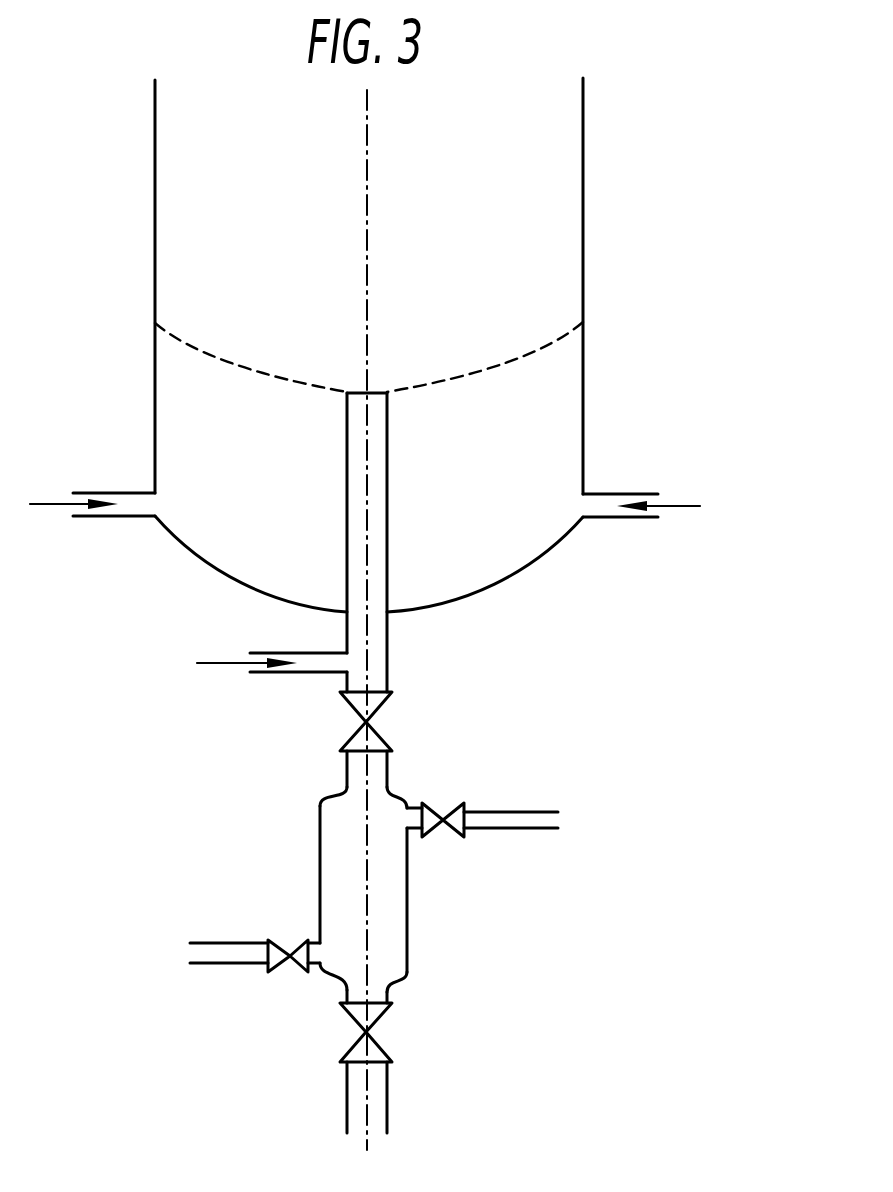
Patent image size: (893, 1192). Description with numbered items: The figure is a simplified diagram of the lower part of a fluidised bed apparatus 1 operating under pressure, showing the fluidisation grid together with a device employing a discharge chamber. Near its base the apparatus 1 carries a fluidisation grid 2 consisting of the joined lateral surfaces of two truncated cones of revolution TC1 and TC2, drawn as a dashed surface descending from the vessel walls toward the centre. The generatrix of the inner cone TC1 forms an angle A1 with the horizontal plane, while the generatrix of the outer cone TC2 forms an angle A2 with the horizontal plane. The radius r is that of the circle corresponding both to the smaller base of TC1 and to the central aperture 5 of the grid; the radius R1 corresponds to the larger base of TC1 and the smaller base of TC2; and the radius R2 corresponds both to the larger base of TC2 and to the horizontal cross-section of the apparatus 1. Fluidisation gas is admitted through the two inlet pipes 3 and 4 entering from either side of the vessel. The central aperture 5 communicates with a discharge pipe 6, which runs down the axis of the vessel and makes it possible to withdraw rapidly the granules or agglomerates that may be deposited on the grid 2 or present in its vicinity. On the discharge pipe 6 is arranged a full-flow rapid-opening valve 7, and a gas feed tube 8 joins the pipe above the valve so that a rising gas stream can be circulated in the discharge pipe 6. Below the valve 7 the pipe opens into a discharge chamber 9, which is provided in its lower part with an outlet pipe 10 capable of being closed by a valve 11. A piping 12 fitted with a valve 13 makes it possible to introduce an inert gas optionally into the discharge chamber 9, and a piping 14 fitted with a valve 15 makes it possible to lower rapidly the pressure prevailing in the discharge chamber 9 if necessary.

The fluidised bed apparatus 1 is at (157, 182).
The fluidisation grid 2 is at (243, 369).
The inlet pipe for fluidisation gas 3 is at (98, 490).
The inlet pipe for fluidisation gas 4 is at (626, 520).
The central aperture of the fluidisation grid 5 is at (354, 397).
The discharge pipe 6 is at (347, 512).
The full-flow rapid-opening valve 7 is at (378, 734).
The gas feed tube 8 is at (290, 675).
The discharge chamber 9 is at (320, 836).
The outlet pipe 10 is at (387, 1112).
The valve 11 is at (375, 1040).
The piping 12 is at (225, 965).
The valve 13 is at (300, 970).
The piping 14 is at (495, 811).
The valve 15 is at (448, 832).
The truncated cone of revolution TC1 is at (287, 383).
The truncated cone of revolution TC2 is at (180, 343).
The radius R1 is at (505, 372).
The radius R2 is at (583, 130).
The radius r is at (387, 392).
The angle A1 is at (387, 393).
The angle A2 is at (503, 372).